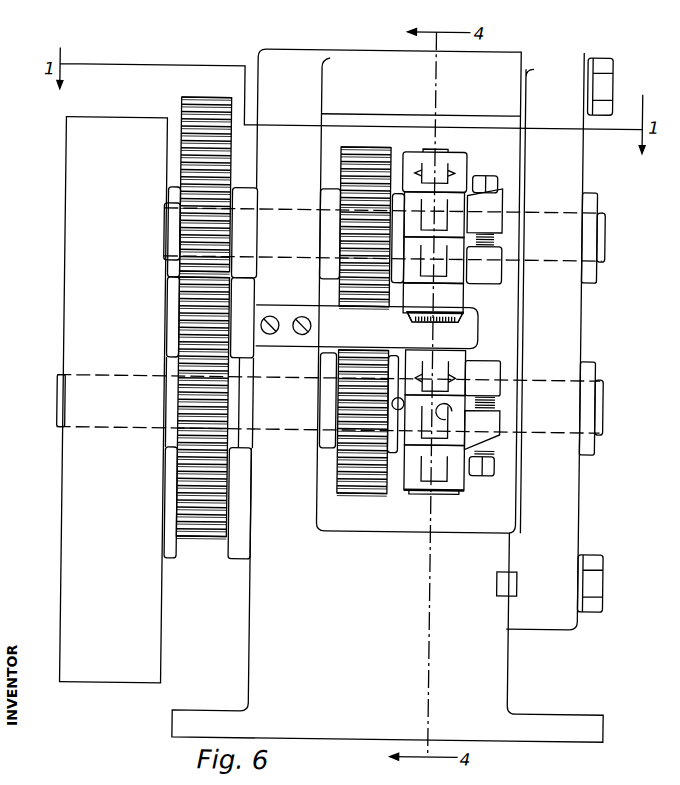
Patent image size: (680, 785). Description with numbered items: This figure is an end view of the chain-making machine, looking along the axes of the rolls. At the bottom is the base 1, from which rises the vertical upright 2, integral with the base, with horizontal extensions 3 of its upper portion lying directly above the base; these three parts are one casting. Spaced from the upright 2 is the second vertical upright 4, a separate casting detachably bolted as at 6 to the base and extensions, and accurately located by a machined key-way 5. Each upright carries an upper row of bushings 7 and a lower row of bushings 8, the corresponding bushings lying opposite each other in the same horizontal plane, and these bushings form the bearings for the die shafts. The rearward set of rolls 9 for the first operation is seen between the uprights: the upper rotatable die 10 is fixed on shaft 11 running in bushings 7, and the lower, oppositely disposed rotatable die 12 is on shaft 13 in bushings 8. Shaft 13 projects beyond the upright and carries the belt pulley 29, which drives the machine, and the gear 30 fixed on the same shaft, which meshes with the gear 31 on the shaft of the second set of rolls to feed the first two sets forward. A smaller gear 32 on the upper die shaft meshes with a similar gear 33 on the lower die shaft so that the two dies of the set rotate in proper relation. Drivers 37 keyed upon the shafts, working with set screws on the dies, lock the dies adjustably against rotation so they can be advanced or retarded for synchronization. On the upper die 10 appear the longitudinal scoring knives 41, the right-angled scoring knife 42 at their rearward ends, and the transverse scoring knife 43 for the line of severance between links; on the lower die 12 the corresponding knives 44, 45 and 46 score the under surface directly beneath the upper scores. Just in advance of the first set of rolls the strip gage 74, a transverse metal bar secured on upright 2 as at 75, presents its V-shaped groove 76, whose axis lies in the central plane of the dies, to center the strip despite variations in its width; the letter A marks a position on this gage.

The base 1 is at (273, 645).
The vertical upright 2 is at (277, 62).
The horizontal extensions 3 is at (366, 67).
The vertical upright 4 is at (557, 318).
The machined key-way 5 is at (519, 586).
The bolts 6 is at (598, 62).
The upper rows of bushings 7 is at (270, 205).
The lower rows of bushings 8 is at (595, 443).
The rearward set of rolls or rotatable dies 9 is at (477, 350).
The upper rotatable die 10 is at (460, 167).
The shaft 11 is at (600, 244).
The lower rotatable die 12 is at (450, 474).
The shaft 13 is at (57, 400).
The belt pulley 29 is at (106, 111).
The gear 30 is at (200, 543).
The gear 31 is at (206, 87).
The smaller gears 32 is at (372, 134).
The gears 33 is at (352, 490).
The drivers 37 is at (478, 284).
The scoring knives 41 is at (435, 173).
The scoring knife 42 is at (433, 260).
The scoring knife 43 is at (432, 215).
The scoring knives 44 is at (435, 373).
The scoring knife 45 is at (434, 420).
The scoring knife 46 is at (401, 413).
The strip gage 74 is at (342, 322).
The fastening of the gage 75 is at (300, 334).
The V-shaped groove 76 is at (446, 323).
The plate A is at (420, 324).